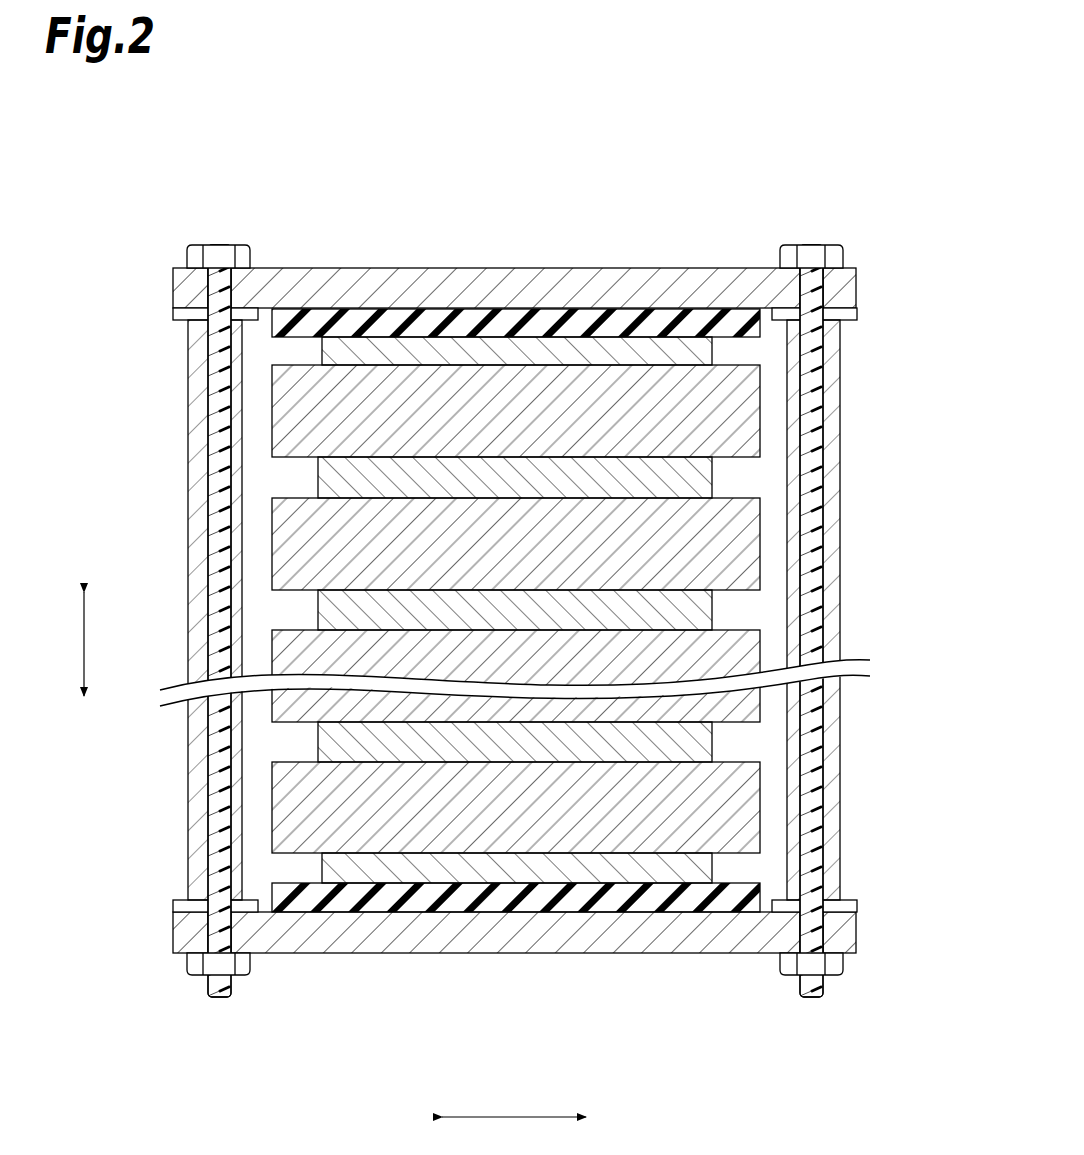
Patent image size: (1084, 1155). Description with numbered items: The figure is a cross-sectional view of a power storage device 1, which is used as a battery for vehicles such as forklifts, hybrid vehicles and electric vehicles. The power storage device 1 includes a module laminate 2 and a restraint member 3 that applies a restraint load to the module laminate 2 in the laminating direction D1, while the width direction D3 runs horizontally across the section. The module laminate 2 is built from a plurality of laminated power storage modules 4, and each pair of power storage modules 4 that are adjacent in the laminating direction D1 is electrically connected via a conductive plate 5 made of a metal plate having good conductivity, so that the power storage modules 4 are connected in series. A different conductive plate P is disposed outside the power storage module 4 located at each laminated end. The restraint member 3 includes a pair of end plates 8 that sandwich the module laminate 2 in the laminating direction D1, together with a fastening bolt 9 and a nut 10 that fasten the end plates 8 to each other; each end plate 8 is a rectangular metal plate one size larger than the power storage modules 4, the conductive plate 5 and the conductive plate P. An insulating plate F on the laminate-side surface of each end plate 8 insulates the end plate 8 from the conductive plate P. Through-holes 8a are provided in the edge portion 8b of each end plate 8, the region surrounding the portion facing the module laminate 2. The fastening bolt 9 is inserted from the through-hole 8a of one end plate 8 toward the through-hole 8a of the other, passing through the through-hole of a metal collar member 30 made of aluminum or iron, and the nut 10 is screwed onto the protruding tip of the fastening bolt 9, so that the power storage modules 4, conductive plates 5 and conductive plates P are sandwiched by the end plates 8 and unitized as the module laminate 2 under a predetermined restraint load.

The power storage device 1 is at (196, 168).
The module laminate 2 is at (176, 624).
The restraint member 3 is at (900, 246).
The power storage module 4 is at (762, 395).
The conductive plate 5 is at (714, 480).
The end plate 8 is at (548, 268).
The through-hole 8a is at (213, 290).
The edge portion 8b is at (172, 290).
The fastening bolt 9 is at (208, 583).
The nut 10 is at (195, 968).
The collar member 30 is at (188, 742).
The insulating plate F is at (764, 328).
The conductive plate P is at (713, 352).
The laminating direction D1 is at (64, 644).
The width direction D3 is at (514, 1100).